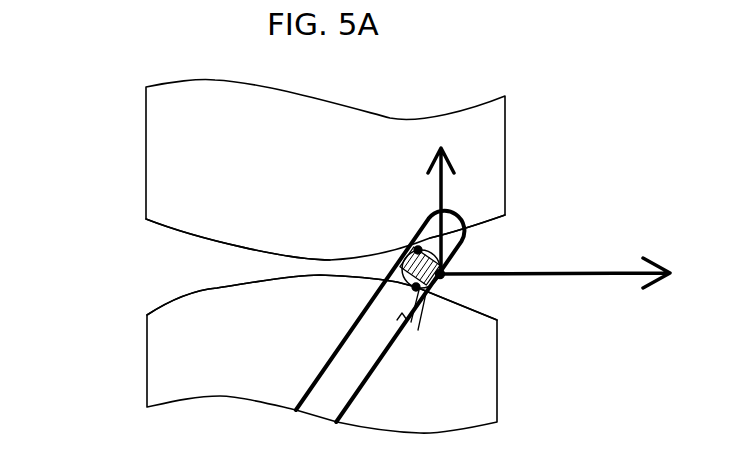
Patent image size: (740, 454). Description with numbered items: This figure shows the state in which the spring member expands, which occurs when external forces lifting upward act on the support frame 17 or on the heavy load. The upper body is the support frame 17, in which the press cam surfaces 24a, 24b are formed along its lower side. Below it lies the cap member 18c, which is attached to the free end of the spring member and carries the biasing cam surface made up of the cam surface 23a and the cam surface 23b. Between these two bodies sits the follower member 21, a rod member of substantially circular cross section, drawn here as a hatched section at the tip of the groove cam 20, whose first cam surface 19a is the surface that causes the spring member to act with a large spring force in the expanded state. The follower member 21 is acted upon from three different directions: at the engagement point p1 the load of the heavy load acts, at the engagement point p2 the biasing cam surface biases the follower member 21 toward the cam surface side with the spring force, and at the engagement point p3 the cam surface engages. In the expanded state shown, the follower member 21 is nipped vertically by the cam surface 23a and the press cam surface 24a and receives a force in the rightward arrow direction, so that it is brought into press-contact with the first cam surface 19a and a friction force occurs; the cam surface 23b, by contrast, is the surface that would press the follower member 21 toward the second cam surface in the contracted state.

The support frame 17 is at (215, 140).
The press cam surface 24b is at (215, 243).
The press cam surface 24a is at (470, 230).
The cap member 18c is at (180, 357).
The cam surface 23b is at (217, 288).
The cam surface 23a is at (472, 298).
The groove cam 20 is at (313, 381).
The follower member 21 is at (400, 258).
The first cam surface 19a is at (399, 318).
The engagement point p1 is at (416, 249).
The engagement point p2 is at (413, 288).
The engagement point p3 is at (441, 278).